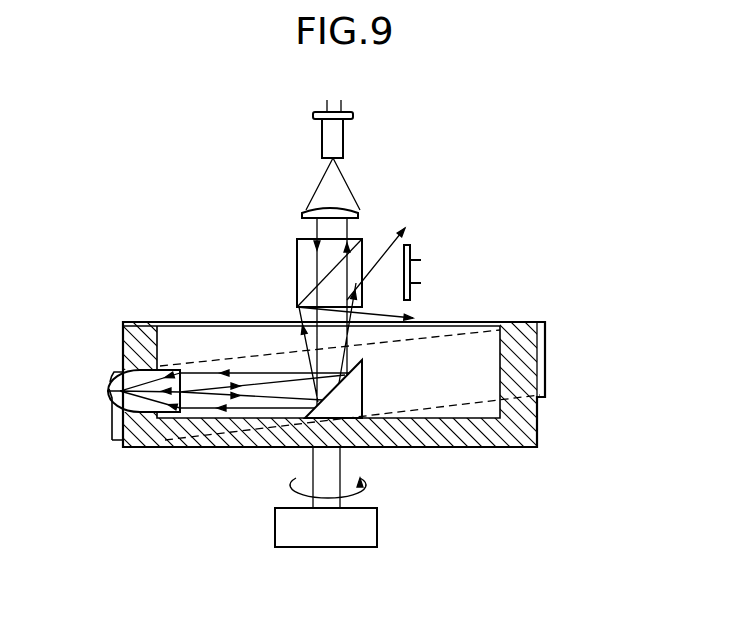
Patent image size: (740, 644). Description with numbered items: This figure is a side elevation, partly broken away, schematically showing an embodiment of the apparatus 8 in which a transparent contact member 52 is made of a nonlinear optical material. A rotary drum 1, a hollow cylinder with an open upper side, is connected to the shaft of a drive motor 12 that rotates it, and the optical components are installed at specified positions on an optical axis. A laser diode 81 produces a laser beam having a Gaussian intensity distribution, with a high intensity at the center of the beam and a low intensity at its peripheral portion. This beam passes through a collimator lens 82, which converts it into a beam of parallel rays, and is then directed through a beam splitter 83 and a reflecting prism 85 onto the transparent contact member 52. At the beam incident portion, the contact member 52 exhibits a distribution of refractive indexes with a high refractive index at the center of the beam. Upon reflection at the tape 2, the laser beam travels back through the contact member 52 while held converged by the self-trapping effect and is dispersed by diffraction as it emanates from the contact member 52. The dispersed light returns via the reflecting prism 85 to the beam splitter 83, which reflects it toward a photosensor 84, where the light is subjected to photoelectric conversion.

The optical inspection apparatus 8 is at (540, 173).
The rotary drum 1 is at (507, 442).
The tape 2 is at (107, 422).
The drive motor 12 is at (333, 535).
The transparent contact member 52 is at (118, 380).
The laser diode 81 is at (344, 142).
The collimator lens 82 is at (352, 208).
The beam splitter 83 is at (299, 276).
The photosensor 84 is at (421, 272).
The reflecting prism 85 is at (365, 389).